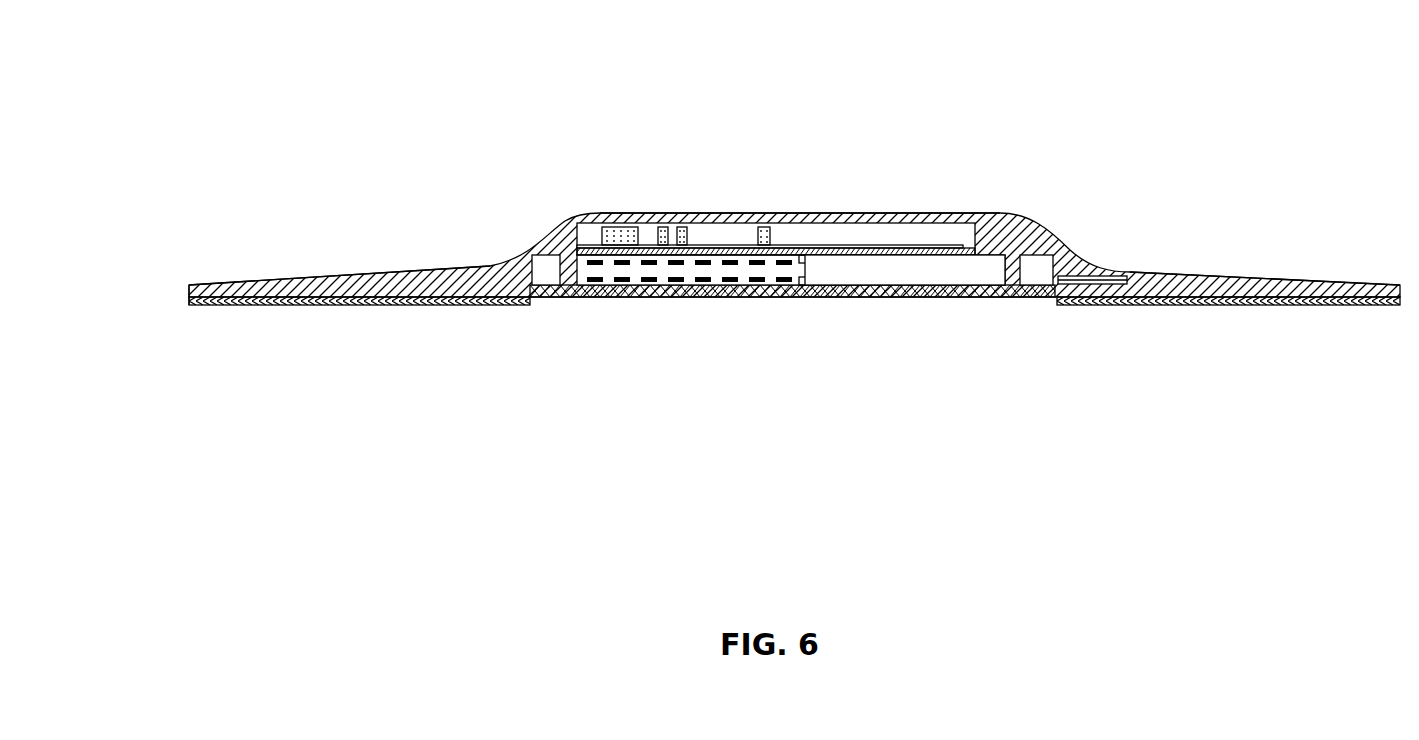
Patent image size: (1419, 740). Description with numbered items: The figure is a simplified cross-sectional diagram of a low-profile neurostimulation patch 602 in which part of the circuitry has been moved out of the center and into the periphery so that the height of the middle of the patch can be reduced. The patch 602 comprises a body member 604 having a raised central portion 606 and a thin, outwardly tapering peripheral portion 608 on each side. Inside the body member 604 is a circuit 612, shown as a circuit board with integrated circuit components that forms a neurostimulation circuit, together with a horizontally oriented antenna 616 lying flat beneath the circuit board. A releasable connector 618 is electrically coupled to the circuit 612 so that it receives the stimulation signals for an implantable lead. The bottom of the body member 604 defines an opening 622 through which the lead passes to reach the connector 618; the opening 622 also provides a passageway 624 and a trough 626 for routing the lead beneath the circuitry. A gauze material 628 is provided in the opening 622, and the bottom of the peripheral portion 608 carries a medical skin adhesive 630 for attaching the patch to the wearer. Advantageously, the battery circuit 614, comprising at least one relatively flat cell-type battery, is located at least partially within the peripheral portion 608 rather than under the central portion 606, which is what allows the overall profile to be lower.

The neurostimulation patch 602 is at (488, 104).
The body member 604 is at (189, 292).
The central portion 606 is at (857, 213).
The peripheral portion 608 is at (305, 280).
The circuit 612 is at (731, 247).
The battery circuit 614 is at (1100, 274).
The horizontally oriented antenna 616 is at (936, 246).
The releasable connector 618 is at (808, 272).
The opening 622 is at (812, 306).
The passageway 624 is at (919, 284).
The trough 626 is at (545, 278).
The gauze material 628 is at (683, 296).
The medical skin adhesive 630 is at (325, 305).